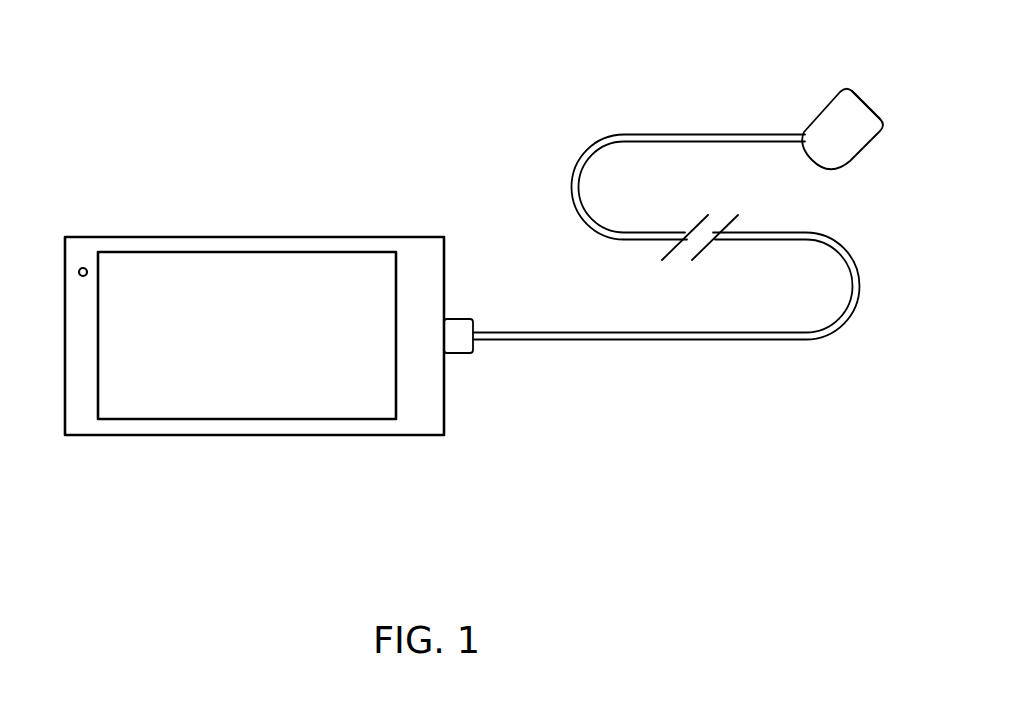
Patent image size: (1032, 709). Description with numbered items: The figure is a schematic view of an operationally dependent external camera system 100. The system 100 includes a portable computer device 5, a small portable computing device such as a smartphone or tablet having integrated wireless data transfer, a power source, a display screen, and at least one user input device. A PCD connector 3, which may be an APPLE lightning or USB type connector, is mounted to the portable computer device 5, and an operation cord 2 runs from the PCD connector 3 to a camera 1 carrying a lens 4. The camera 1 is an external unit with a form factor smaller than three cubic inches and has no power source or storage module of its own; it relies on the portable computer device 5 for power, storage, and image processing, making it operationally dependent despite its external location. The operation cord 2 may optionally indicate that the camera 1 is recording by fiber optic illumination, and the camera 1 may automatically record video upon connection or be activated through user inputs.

The operationally dependent external camera system 100 is at (141, 96).
The camera 1 is at (832, 101).
The operation cord 2 is at (690, 134).
The PCD connector 3 is at (457, 343).
The lens 4 is at (868, 105).
The portable computer device 5 is at (244, 426).